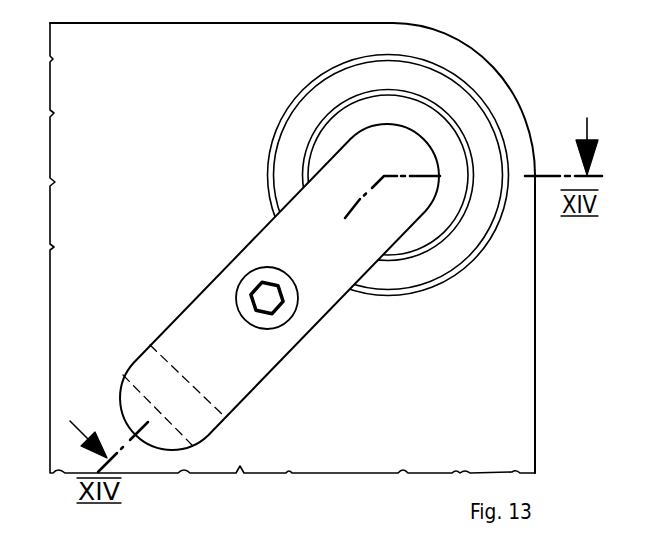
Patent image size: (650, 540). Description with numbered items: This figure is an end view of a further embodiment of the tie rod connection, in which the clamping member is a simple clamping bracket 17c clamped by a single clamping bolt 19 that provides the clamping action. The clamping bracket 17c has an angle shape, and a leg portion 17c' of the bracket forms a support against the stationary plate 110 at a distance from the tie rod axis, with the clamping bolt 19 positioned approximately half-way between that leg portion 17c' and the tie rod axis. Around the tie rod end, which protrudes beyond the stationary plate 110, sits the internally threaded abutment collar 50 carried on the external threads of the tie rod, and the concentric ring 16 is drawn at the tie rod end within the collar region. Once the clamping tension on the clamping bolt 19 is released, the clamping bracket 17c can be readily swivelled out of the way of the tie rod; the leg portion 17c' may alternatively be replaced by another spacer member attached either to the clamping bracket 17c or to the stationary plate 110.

The stationary plate 110 is at (388, 445).
The abutment collar 50 is at (450, 255).
The inner bearing ring 16 is at (342, 127).
The clamping bracket 17c is at (280, 287).
The leg portion 17c' is at (169, 372).
The clamping bolt 19 is at (273, 302).